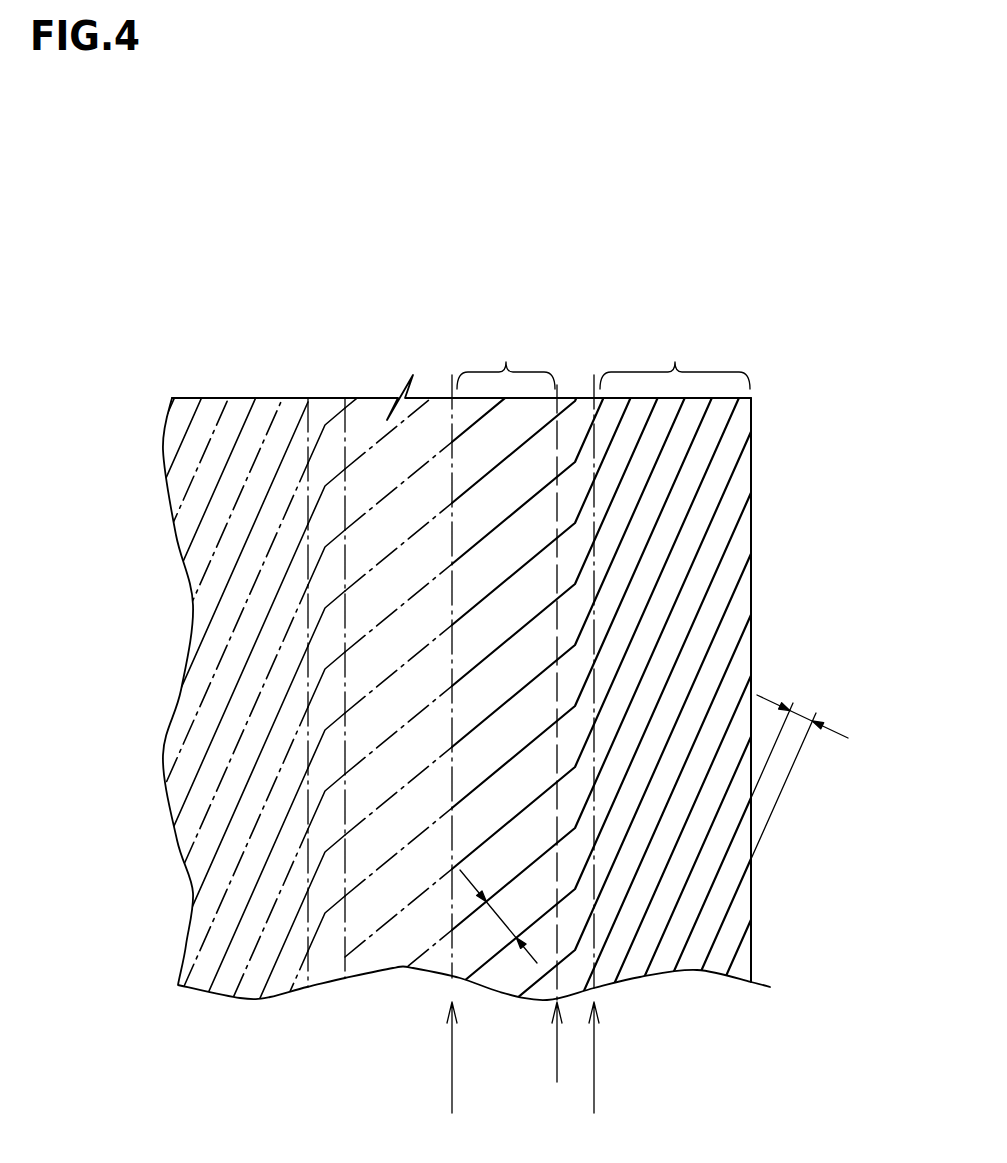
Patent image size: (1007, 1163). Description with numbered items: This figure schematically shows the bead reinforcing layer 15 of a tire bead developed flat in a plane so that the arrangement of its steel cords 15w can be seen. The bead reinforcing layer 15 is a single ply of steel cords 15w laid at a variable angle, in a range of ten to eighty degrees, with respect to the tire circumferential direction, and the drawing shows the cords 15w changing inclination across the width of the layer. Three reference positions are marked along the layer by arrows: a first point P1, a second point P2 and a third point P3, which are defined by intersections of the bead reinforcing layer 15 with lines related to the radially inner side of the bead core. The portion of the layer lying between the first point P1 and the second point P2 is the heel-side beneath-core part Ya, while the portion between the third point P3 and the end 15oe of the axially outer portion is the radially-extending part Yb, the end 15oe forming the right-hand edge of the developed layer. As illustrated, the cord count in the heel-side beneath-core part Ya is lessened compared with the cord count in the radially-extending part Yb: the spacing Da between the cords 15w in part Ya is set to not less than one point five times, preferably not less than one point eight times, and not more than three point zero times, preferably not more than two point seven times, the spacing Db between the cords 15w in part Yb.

The bead reinforcing layer 15 is at (521, 581).
The steel cords 15w is at (730, 481).
The end of the outer portion 15oe is at (751, 933).
The heel-side beneath-core part Ya is at (506, 359).
The radially-extending part Yb is at (675, 359).
The spacing between the cords of the heel-side beneath-core part Da is at (497, 916).
The spacing between the cords of the radially-extending part Db is at (799, 770).
The first point P1 is at (450, 1078).
The second point P2 is at (559, 1059).
The third point P3 is at (598, 1078).